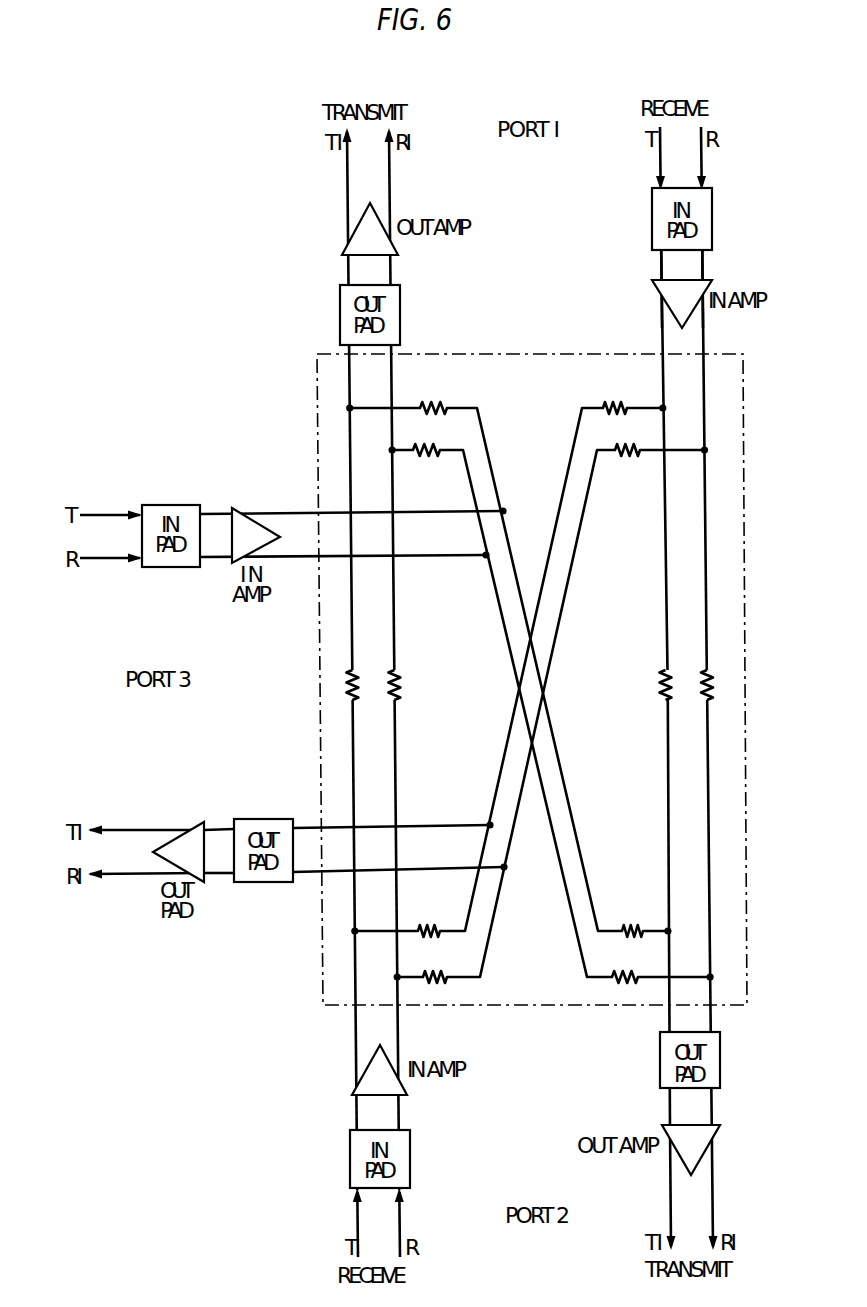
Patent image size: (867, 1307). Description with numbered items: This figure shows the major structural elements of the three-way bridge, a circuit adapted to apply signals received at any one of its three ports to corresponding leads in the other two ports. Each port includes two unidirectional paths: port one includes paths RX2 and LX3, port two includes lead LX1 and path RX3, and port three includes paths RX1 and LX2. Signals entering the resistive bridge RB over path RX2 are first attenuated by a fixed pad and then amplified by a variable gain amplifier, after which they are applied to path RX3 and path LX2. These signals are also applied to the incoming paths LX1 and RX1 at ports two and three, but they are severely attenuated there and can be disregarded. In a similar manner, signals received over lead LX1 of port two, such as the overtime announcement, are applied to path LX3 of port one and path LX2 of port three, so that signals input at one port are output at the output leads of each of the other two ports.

The resistive bridge RB is at (318, 412).
The unidirectional path LX3 is at (396, 176).
The unidirectional path RX2 is at (700, 166).
The incoming path RX1 is at (110, 565).
The unidirectional path LX2 is at (124, 884).
The lead LX1 is at (408, 1225).
The path RX3 is at (672, 1206).